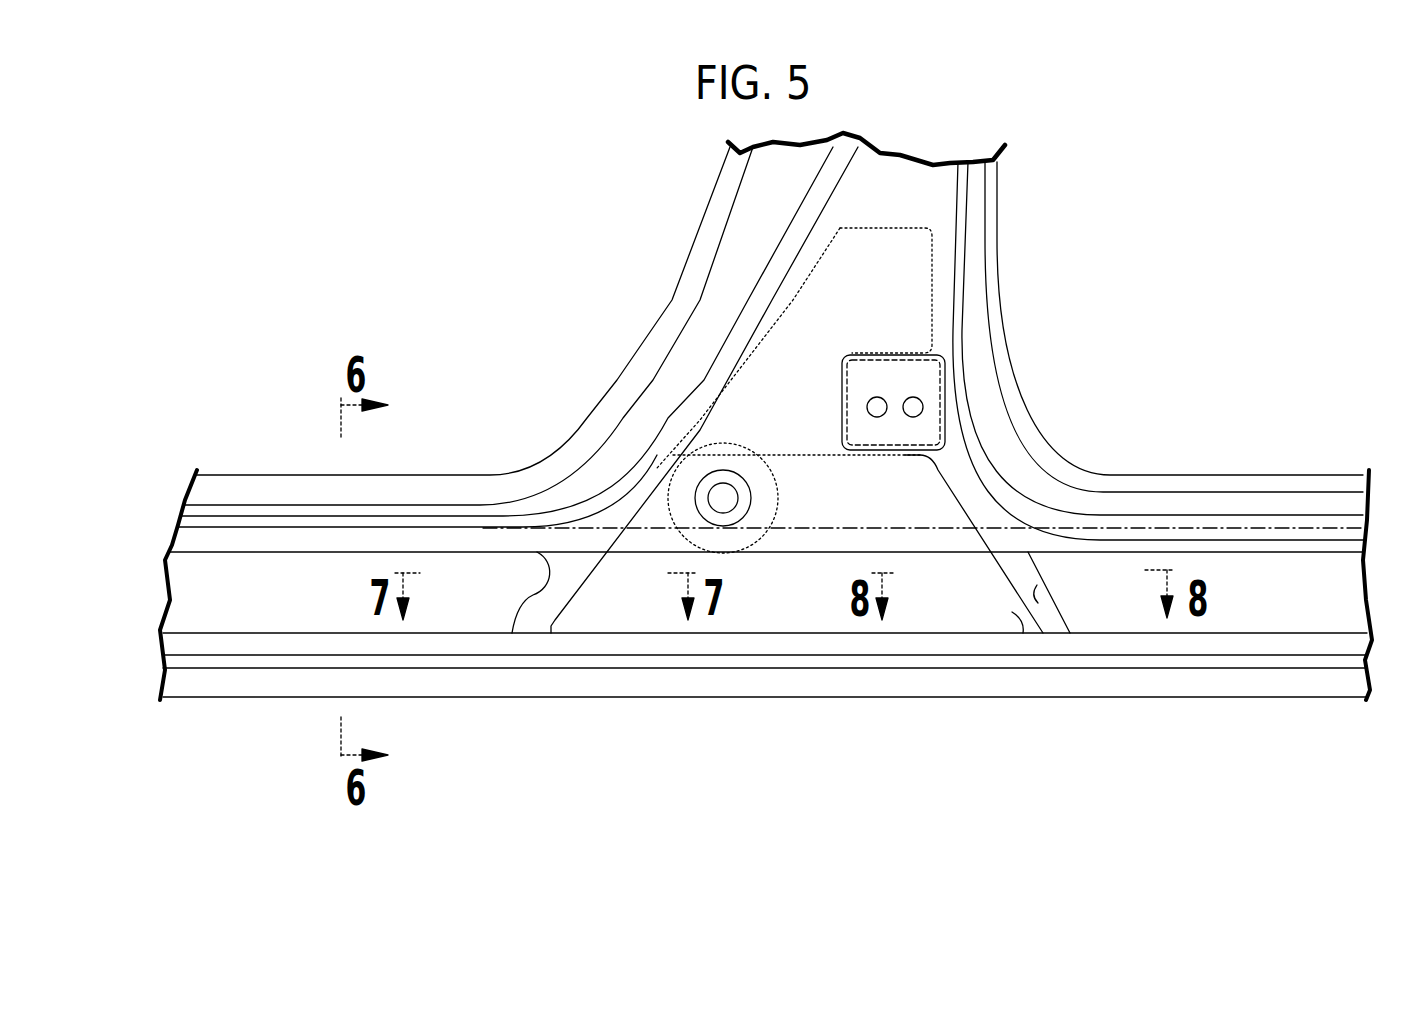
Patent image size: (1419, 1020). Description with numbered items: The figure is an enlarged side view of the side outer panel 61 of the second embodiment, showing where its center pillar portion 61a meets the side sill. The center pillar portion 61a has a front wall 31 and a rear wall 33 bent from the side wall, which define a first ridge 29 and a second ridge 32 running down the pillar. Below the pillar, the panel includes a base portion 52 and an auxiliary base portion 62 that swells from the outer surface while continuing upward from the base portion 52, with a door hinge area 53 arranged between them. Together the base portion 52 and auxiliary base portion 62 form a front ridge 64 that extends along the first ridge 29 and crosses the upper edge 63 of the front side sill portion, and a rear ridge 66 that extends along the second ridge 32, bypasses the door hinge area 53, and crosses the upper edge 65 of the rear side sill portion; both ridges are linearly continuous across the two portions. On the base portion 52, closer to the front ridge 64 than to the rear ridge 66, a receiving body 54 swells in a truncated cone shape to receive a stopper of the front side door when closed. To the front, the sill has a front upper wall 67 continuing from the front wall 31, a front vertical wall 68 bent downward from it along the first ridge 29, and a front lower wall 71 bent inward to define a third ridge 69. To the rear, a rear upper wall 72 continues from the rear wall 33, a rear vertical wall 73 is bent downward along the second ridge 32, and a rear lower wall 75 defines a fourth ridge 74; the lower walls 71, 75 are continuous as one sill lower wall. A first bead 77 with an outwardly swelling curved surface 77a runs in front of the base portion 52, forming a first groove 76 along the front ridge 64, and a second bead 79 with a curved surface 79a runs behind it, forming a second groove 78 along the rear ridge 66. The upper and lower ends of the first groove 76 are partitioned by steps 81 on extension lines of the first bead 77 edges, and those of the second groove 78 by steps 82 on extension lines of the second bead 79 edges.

The first ridge 29 is at (713, 347).
The front wall 31 is at (740, 260).
The second ridge 32 is at (957, 352).
The rear wall 33 is at (977, 403).
The base portion 52 is at (780, 612).
The door hinge area 53 is at (848, 387).
The receiving body 54 is at (740, 505).
The side outer panel 61 is at (1012, 219).
The center pillar portion 61a is at (712, 198).
The auxiliary base portion 62 is at (913, 295).
The upper edge of the front side sill portion 63 is at (573, 527).
The front ridge 64 is at (655, 495).
The upper edge of the rear side sill portion 65 is at (1098, 525).
The rear ridge 66 is at (990, 460).
The front upper wall 67 is at (263, 512).
The front vertical wall 68 is at (168, 540).
The third ridge 69 is at (298, 660).
The front lower wall 71 is at (250, 665).
The rear upper wall 72 is at (1303, 523).
The rear vertical wall 73 is at (1342, 545).
The fourth ridge 74 is at (1313, 660).
The rear lower wall 75 is at (1233, 660).
The first groove 76 is at (545, 583).
The first bead 77 is at (432, 637).
The curved surface 77a is at (262, 605).
The second groove 78 is at (1050, 603).
The second bead 79 is at (1183, 637).
The curved surface 79a is at (1277, 605).
The step 81 is at (527, 621).
The step 82 is at (1045, 577).